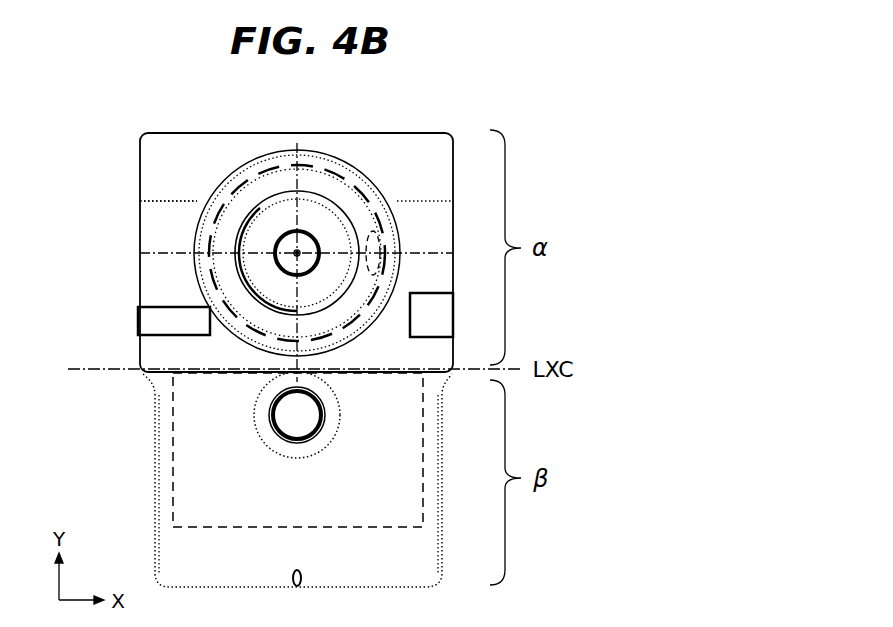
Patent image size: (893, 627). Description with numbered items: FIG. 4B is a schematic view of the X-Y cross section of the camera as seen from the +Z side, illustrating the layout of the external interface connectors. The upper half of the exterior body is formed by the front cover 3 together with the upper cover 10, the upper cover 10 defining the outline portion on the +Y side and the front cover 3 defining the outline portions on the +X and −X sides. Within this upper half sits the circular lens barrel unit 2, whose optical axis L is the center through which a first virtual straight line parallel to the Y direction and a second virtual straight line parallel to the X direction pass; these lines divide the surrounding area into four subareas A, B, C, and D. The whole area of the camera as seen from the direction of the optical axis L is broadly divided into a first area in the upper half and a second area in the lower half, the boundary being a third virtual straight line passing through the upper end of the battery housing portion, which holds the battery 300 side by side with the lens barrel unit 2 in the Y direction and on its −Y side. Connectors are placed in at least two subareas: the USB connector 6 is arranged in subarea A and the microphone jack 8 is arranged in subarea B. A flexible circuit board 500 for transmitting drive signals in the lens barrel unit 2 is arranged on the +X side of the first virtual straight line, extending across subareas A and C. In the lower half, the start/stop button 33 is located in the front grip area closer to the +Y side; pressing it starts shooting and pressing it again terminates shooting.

The lens barrel unit 2 is at (303, 182).
The front cover 3 is at (167, 240).
The USB connector 6 is at (434, 316).
The microphone jack 8 is at (155, 322).
The upper cover 10 is at (165, 186).
The start/stop button 33 is at (290, 410).
The battery 300 is at (193, 485).
The flexible circuit board 500 is at (378, 233).
The optical axis L is at (297, 253).